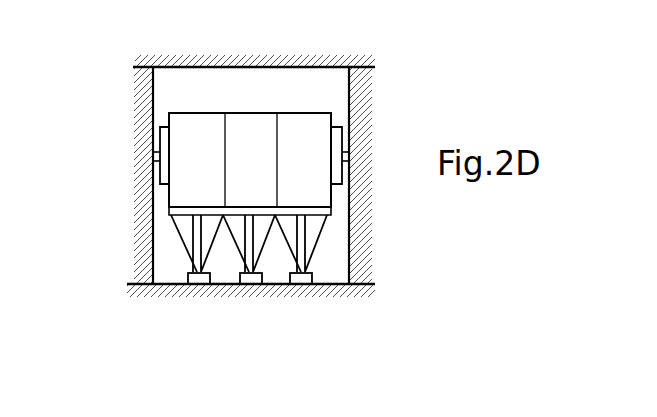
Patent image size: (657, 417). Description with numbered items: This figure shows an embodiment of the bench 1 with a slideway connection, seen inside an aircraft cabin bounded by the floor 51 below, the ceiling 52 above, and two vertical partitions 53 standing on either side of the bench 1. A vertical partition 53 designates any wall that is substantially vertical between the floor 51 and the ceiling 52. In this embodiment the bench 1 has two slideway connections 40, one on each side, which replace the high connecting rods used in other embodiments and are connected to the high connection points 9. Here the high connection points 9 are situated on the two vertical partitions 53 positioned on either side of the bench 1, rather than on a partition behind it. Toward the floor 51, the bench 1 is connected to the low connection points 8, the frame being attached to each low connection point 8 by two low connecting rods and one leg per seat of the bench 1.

The bench 1 is at (248, 144).
The low connection point 8 is at (197, 271).
The high connection point 9 is at (160, 159).
The slideway connection 40 is at (165, 135).
The floor 51 is at (137, 291).
The ceiling 52 is at (170, 62).
The vertical partition 53 is at (152, 215).